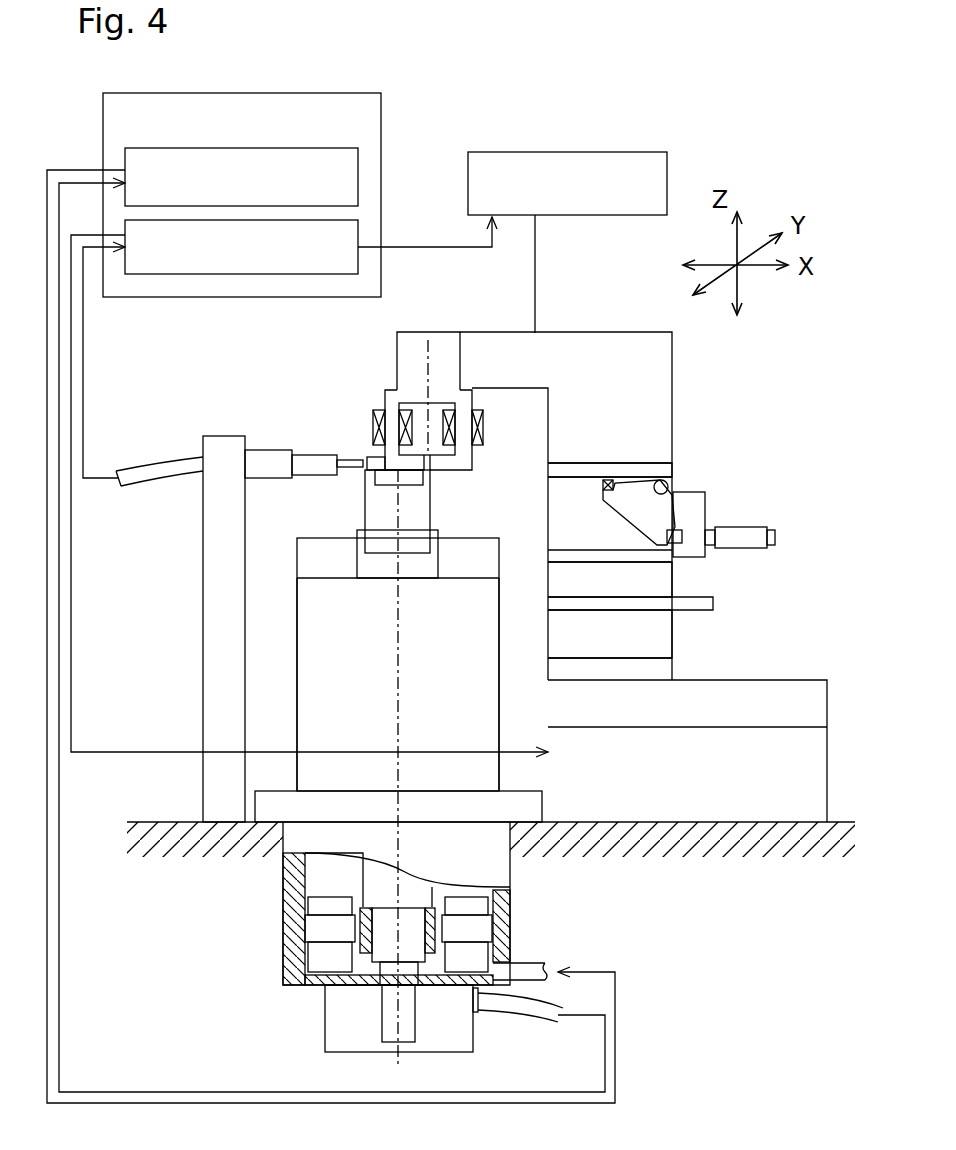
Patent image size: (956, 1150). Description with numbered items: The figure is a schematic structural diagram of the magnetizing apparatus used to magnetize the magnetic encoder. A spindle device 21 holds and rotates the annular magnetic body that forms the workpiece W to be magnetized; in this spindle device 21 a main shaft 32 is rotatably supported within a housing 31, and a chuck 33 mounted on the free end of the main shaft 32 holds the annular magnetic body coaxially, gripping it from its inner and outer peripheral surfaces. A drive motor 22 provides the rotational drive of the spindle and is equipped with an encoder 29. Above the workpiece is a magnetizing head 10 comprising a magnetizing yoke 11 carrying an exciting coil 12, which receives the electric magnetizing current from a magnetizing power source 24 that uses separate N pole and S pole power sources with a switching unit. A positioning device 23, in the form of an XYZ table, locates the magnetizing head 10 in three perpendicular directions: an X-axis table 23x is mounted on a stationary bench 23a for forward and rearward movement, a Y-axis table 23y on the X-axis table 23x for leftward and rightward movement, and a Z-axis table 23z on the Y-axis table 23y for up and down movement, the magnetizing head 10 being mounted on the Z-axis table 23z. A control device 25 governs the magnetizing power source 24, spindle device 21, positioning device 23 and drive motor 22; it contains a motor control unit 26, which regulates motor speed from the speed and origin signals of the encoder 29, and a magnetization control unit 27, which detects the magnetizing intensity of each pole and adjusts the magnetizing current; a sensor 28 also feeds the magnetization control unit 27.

The magnetizing head 10 is at (409, 319).
The magnetizing yoke 11 is at (447, 345).
The exciting coil 12 is at (381, 410).
The spindle device 21 is at (310, 636).
The drive motor 22 is at (472, 955).
The positioning device 23 is at (687, 629).
The stationary bench 23a is at (778, 800).
The X-axis table 23x is at (663, 637).
The Y-axis table 23y is at (660, 580).
The Z-axis table 23z is at (655, 450).
The magnetizing power source 24 is at (552, 152).
The control device 25 is at (338, 93).
The motor control unit 26 is at (358, 178).
The magnetization control unit 27 is at (382, 235).
The sensor 28 is at (272, 455).
The encoder 29 is at (470, 1035).
The housing 31 is at (322, 707).
The main shaft 32 is at (366, 568).
The chuck 33 is at (368, 483).
The workpiece W is at (368, 455).